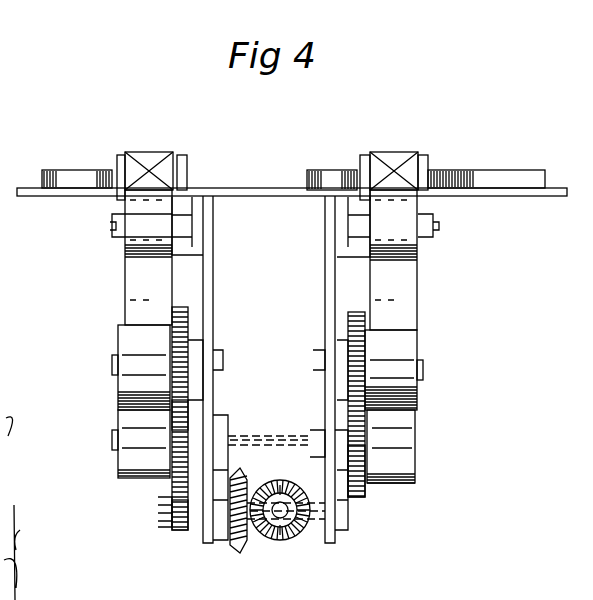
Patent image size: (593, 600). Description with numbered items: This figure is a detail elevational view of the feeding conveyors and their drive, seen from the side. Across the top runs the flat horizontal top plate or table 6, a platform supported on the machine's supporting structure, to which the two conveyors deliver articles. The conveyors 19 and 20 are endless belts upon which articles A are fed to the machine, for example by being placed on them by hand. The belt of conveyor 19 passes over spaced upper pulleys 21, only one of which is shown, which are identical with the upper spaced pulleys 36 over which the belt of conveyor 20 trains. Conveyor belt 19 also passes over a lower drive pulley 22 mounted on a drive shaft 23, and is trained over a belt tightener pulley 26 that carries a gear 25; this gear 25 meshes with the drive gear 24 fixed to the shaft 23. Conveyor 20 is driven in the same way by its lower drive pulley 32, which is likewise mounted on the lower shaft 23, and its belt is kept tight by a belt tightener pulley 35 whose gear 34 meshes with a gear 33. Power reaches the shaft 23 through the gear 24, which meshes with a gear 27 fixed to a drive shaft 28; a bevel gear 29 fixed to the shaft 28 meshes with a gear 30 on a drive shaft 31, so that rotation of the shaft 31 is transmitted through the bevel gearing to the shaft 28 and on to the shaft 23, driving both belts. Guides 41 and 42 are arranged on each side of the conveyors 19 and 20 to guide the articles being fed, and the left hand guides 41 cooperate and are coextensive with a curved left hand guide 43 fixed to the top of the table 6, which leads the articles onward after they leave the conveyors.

The top plate or table 6 is at (22, 196).
The curved left hand guide 43 is at (42, 172).
The article A is at (155, 152).
The left hand guide 41 is at (119, 156).
The guide 42 is at (187, 160).
The conveyor 19 is at (128, 297).
The conveyor 20 is at (405, 298).
The upper pulley 21 is at (125, 250).
The upper spaced pulley 36 is at (418, 250).
The belt tightener pulley 26 is at (123, 340).
The belt tightener pulley 35 is at (405, 343).
The lower drive pulley 22 is at (120, 462).
The lower drive pulley 32 is at (417, 463).
The gear 25 is at (189, 319).
The gear 34 is at (348, 322).
The drive gear 24 is at (188, 412).
The gear 27 is at (173, 531).
The gear 33 is at (366, 490).
The drive shaft 23 is at (255, 434).
The drive shaft 31 is at (272, 490).
The drive shaft 28 is at (298, 540).
The gear 30 is at (276, 548).
The bevel gear 29 is at (238, 546).